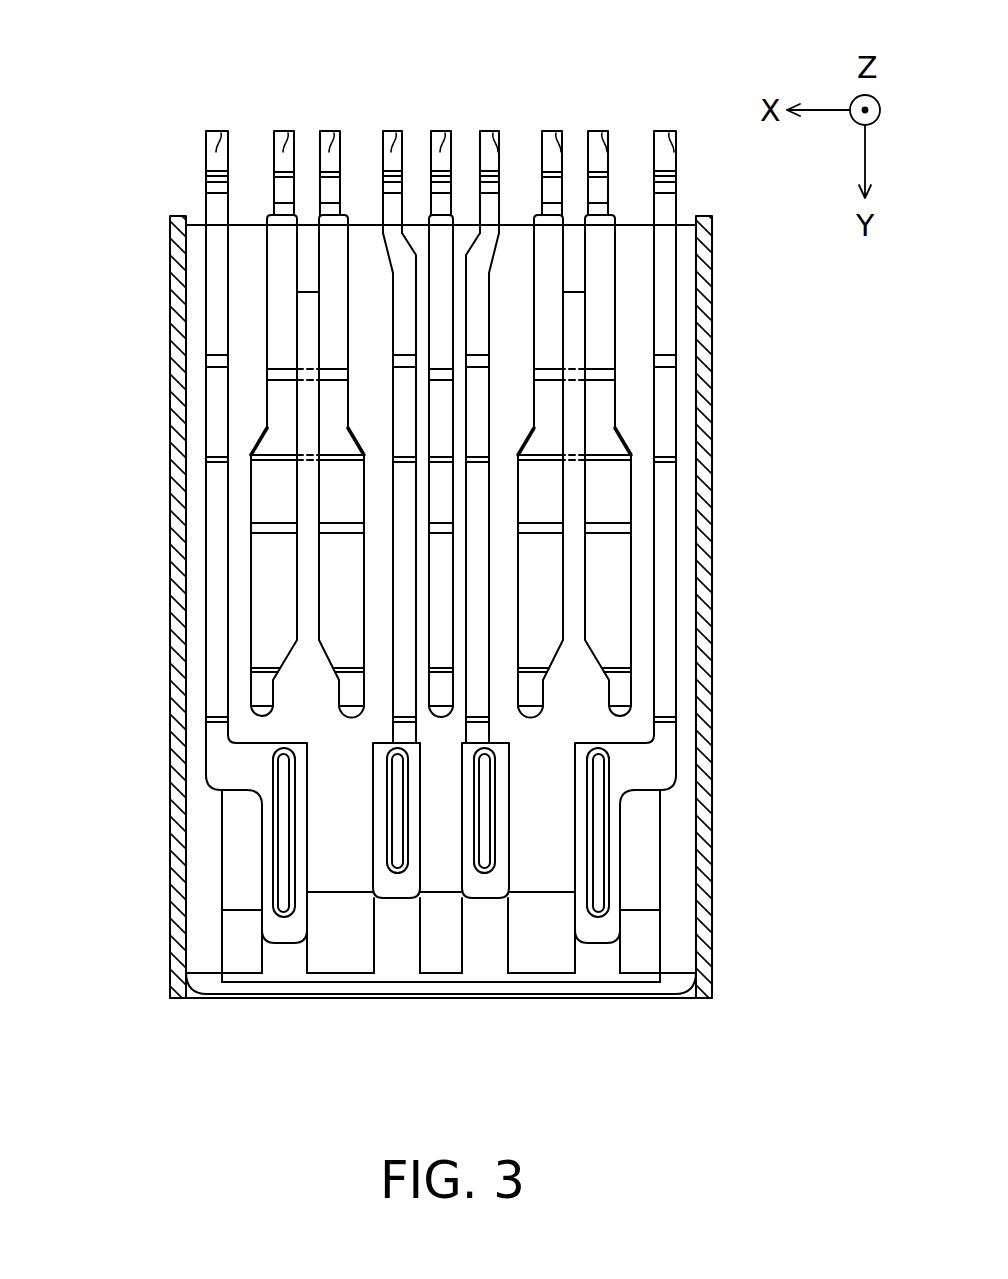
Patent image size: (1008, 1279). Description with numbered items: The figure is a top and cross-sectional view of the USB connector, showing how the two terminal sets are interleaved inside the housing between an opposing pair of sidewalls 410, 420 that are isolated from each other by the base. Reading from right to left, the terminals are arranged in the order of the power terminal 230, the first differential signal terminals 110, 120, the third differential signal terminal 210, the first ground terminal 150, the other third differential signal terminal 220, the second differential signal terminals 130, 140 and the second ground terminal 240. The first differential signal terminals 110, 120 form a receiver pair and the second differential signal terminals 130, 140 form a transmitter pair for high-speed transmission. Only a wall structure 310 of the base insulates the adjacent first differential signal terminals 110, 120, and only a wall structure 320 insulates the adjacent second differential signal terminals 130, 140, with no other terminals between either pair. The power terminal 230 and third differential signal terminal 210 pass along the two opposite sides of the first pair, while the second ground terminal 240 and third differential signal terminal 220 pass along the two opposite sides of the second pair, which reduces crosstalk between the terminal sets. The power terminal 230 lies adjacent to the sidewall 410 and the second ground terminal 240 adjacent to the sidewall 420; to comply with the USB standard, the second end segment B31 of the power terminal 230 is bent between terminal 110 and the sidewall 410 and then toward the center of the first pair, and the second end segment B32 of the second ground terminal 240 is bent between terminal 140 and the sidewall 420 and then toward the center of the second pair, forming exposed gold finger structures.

The first differential signal terminal 110 is at (599, 130).
The first differential signal terminal 120 is at (553, 130).
The second differential signal terminal 130 is at (333, 130).
The second differential signal terminal 140 is at (285, 130).
The first ground terminal 150 is at (445, 130).
The third differential signal terminal 210 is at (492, 130).
The third differential signal terminal 220 is at (392, 130).
The power terminal 230 is at (665, 130).
The second ground terminal 240 is at (215, 130).
The wall structure 310 is at (656, 368).
The wall structure 320 is at (225, 368).
The sidewall 410 is at (703, 682).
The sidewall 420 is at (176, 623).
The second end segment B31 is at (654, 763).
The second end segment B32 is at (228, 763).